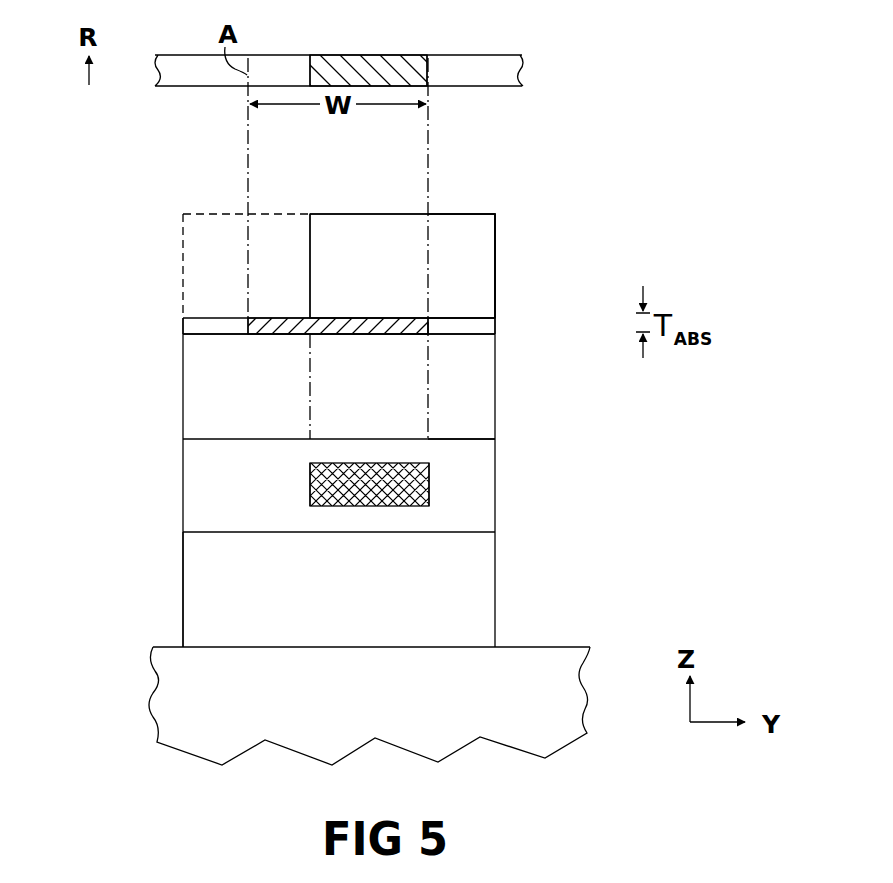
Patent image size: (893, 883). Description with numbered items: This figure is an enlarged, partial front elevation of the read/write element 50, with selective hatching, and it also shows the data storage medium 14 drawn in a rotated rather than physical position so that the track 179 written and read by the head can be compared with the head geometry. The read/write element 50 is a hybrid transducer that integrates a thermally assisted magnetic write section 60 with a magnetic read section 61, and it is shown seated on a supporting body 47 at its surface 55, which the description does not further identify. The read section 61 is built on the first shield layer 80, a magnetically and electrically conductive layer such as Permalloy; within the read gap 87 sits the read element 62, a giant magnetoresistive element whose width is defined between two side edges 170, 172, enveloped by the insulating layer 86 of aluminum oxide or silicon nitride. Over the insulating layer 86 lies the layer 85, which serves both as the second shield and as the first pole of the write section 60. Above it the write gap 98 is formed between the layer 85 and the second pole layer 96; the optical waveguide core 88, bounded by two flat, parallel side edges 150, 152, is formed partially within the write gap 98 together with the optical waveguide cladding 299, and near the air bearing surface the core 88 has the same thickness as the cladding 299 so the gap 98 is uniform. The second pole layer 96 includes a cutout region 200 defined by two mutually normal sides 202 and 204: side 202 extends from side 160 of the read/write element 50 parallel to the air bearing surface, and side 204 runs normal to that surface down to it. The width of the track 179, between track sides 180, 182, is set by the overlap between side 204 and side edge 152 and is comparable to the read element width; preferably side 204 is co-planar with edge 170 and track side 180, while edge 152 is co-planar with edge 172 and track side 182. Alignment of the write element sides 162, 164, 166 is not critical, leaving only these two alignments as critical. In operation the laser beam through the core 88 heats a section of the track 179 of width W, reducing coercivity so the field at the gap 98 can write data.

The magnetic medium 14 is at (514, 72).
The track 179 is at (357, 58).
The track side 180 is at (310, 62).
The track side 182 is at (428, 62).
The read/write element 50 is at (81, 258).
The thermally assisted magnetic write section 60 is at (502, 246).
The magnetic read section 61 is at (555, 500).
The read element 62 is at (304, 496).
The cutout region 200 is at (265, 213).
The side of cutout region 202 is at (292, 225).
The side of second pole layer 204 is at (308, 248).
The second pole layer 96 is at (463, 220).
The side of write element 162 is at (495, 230).
The optical waveguide core 88 is at (258, 322).
The side edge of waveguide core 150 is at (248, 330).
The side edge of waveguide core 152 is at (425, 322).
The side of write element 164 is at (495, 320).
The optical waveguide cladding 299 is at (495, 328).
The side of read/write element 160 is at (183, 400).
The write gap 98 is at (418, 334).
The side of write element 166 is at (495, 390).
The second shield layer / first pole layer 85 is at (188, 433).
The insulating layer 86 is at (495, 450).
The side edge of read element 170 is at (308, 485).
The side edge of read element 172 is at (430, 483).
The read gap 87 is at (495, 518).
The first shield layer 80 is at (198, 587).
The substrate surface 55 is at (553, 643).
The substrate 47 is at (369, 706).